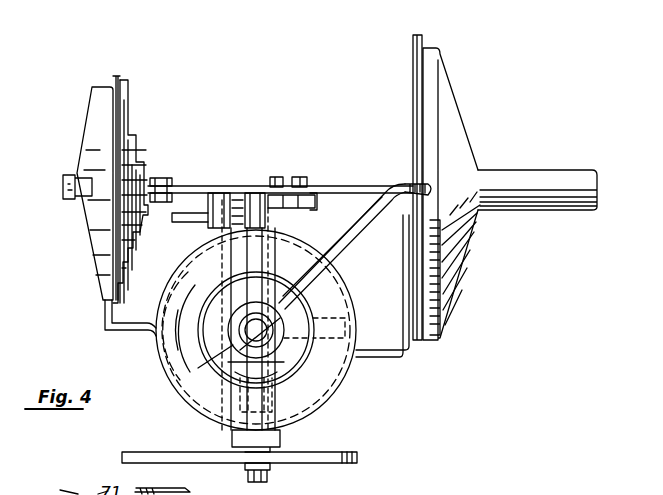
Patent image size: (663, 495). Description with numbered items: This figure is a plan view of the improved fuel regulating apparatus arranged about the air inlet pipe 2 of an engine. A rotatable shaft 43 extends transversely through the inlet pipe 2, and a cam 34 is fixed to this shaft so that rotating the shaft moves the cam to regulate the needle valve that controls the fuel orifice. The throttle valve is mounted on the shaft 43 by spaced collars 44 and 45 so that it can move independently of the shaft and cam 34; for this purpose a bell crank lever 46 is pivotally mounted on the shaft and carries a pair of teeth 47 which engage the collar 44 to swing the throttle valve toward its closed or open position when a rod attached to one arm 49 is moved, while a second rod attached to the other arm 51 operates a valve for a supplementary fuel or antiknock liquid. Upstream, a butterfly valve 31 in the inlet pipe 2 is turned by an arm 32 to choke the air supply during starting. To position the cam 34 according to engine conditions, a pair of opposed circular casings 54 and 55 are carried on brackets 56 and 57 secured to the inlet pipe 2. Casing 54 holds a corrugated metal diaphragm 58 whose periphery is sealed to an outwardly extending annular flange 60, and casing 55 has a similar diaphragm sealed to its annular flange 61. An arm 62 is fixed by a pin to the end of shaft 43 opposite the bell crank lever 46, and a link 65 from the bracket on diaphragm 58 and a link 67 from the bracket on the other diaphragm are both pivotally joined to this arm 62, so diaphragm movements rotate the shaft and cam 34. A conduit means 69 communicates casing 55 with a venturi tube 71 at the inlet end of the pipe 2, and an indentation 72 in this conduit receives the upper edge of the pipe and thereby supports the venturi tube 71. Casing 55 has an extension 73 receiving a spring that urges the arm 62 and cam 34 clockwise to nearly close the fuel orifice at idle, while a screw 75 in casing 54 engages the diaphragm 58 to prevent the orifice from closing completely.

The air inlet pipe 2 is at (326, 416).
The butterfly valve 31 is at (199, 310).
The arm 32 is at (190, 224).
The cam 34 is at (300, 320).
The rotatable shaft 43 is at (258, 182).
The collar 44 is at (283, 378).
The collar 45 is at (270, 246).
The bell crank lever 46 is at (270, 476).
The teeth 47 is at (280, 400).
The arm 49 is at (166, 450).
The arm 51 is at (365, 456).
The casing 54 is at (92, 97).
The casing 55 is at (445, 80).
The bracket 56 is at (104, 318).
The bracket 57 is at (400, 360).
The diaphragm 58 is at (134, 132).
The annular flange 60 is at (116, 74).
The annular flange 61 is at (422, 36).
The arm 62 is at (308, 208).
The link 65 is at (186, 178).
The link 67 is at (359, 184).
The conduit means 69 is at (380, 220).
The venturi tube 71 is at (235, 345).
The indentation 72 is at (344, 275).
The extension 73 is at (559, 168).
The screw 75 is at (40, 172).